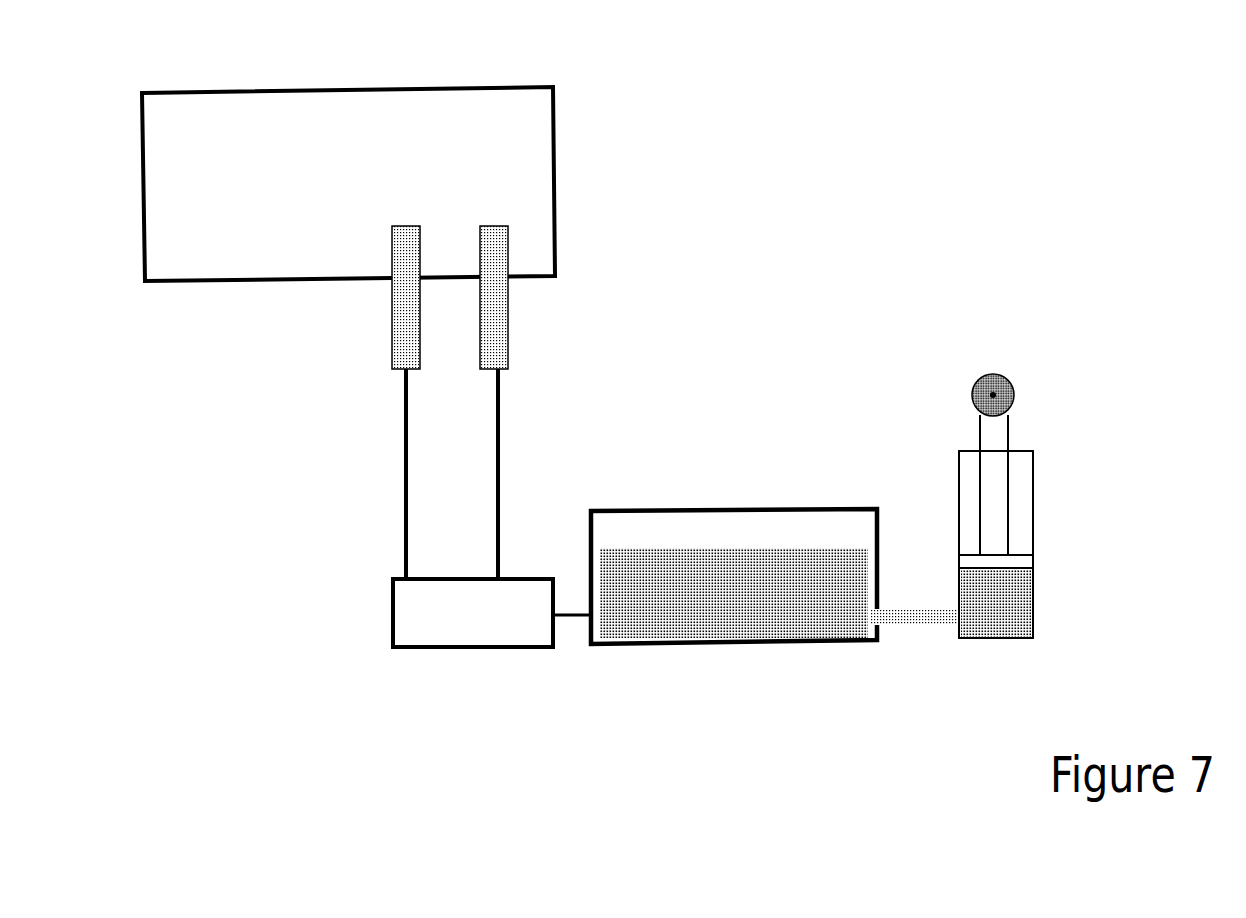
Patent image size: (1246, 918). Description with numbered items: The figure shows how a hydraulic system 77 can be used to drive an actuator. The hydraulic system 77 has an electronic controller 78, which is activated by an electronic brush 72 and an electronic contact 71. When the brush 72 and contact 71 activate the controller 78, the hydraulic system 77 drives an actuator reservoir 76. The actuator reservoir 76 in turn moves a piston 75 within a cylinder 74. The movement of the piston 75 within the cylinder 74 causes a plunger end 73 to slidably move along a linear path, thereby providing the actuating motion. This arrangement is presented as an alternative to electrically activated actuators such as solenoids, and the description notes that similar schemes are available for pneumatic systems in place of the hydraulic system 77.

The electronic contact 71 is at (420, 86).
The electronic brush 72 is at (410, 339).
The plunger end 73 is at (1013, 390).
The cylinder 74 is at (1034, 485).
The piston 75 is at (988, 542).
The actuator reservoir 76 is at (1015, 605).
The hydraulic system 77 is at (718, 598).
The electronic controller 78 is at (502, 622).